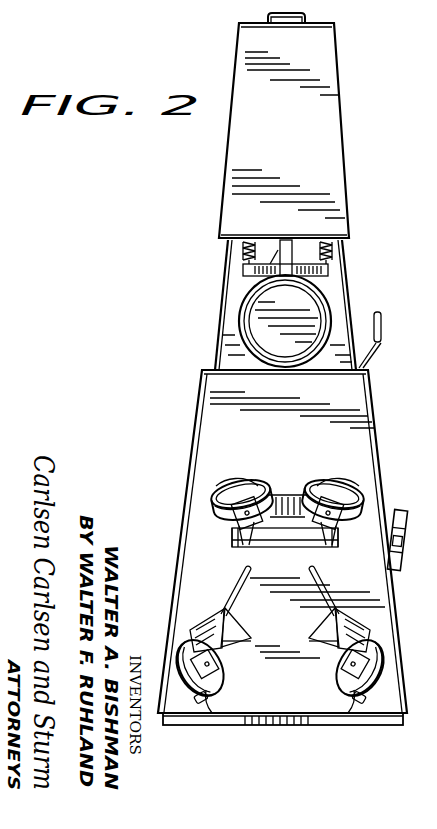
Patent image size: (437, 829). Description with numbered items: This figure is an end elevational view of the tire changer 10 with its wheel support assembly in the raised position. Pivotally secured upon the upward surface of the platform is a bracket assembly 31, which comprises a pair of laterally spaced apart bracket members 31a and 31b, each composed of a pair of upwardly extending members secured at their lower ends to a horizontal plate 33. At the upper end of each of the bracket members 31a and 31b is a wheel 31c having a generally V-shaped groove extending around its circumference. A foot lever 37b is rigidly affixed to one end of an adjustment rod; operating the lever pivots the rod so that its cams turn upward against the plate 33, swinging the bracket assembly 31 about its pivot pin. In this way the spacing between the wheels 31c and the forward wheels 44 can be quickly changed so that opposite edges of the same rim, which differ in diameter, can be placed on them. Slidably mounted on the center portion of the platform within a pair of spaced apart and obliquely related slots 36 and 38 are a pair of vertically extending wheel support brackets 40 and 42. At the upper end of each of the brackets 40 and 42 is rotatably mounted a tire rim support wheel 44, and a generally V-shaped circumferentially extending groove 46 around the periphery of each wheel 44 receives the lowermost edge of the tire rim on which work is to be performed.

The tire changer 10 is at (349, 164).
The bracket assembly 31 is at (284, 504).
The bracket member 31a is at (231, 531).
The bracket member 31b is at (343, 538).
The wheel 31c is at (325, 492).
The horizontal plate 33 is at (283, 542).
The slot 36 is at (233, 603).
The foot lever 37b is at (402, 522).
The slot 38 is at (328, 602).
The wheel support bracket 40 is at (374, 626).
The wheel support bracket 42 is at (207, 622).
The tire rim support wheel 44 is at (348, 678).
The circumferentially extending groove 46 is at (352, 692).